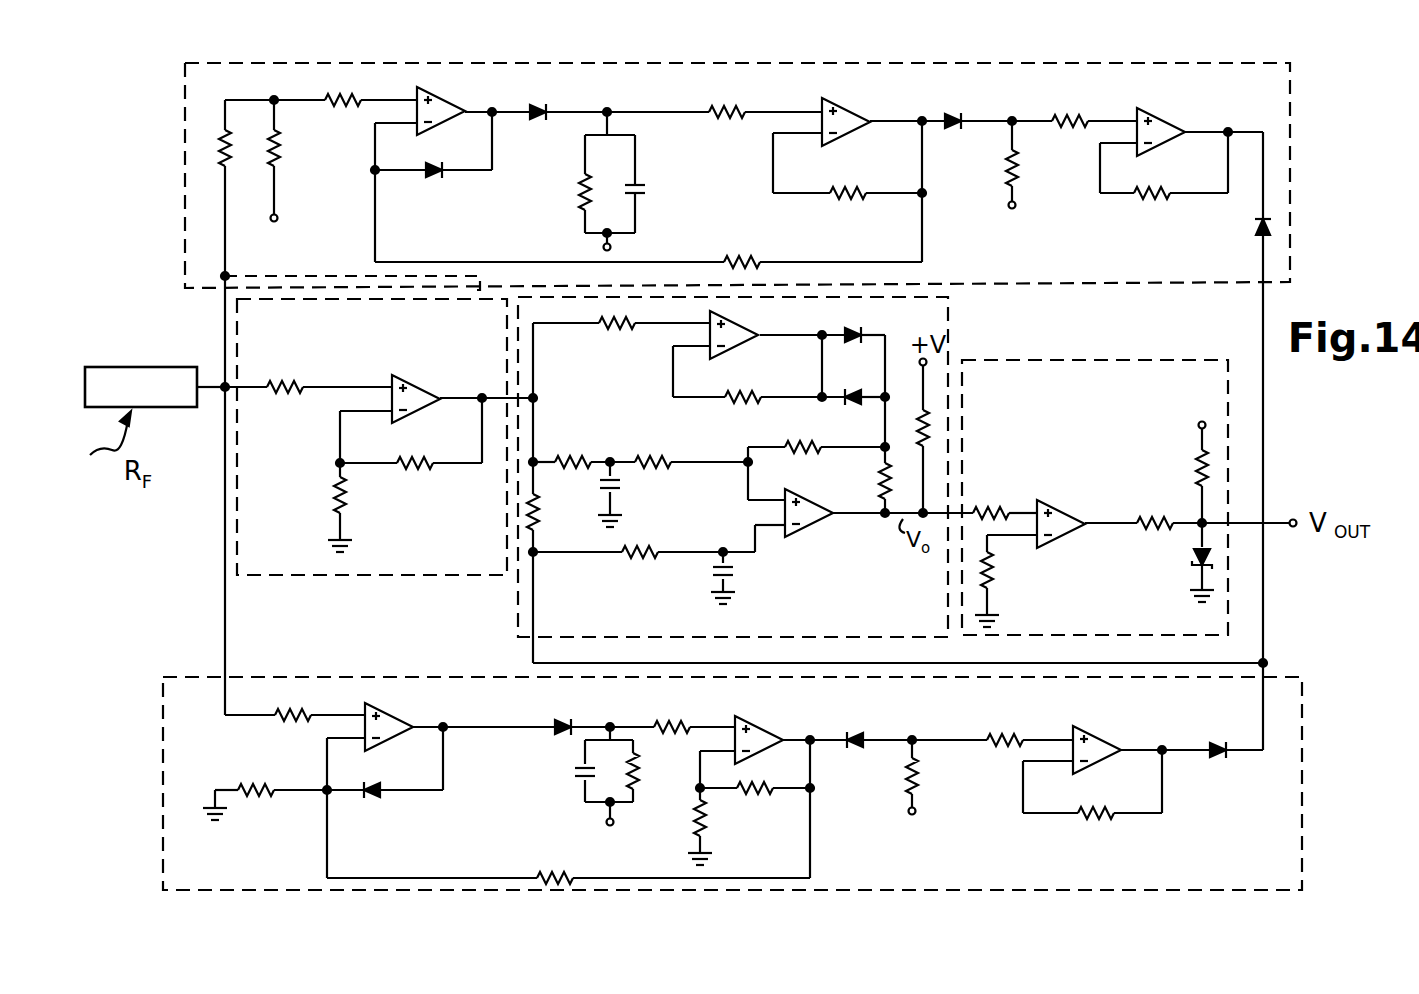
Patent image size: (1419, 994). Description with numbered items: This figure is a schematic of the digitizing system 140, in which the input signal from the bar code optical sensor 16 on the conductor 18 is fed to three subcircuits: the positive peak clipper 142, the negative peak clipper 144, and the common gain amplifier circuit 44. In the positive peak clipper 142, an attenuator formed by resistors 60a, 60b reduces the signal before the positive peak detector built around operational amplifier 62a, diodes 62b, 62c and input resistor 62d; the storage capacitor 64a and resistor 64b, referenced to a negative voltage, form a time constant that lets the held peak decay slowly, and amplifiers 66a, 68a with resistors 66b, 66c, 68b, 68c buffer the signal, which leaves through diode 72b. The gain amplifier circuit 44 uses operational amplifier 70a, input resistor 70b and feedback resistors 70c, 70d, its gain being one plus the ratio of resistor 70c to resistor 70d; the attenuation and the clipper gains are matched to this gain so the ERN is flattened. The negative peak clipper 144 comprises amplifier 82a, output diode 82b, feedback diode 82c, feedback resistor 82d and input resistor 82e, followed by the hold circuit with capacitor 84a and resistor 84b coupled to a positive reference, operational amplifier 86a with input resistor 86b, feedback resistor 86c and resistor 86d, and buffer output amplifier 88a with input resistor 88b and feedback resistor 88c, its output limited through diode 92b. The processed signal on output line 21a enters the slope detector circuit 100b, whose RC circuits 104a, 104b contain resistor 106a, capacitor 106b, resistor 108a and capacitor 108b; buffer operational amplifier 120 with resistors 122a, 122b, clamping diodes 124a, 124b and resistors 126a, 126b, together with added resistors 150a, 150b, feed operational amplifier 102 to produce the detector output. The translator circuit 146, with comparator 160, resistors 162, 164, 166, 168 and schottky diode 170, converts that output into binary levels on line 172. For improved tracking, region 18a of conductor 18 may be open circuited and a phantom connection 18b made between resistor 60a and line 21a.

The system 140 is at (1300, 72).
The positive peak clipper 142 is at (180, 110).
The negative peak clipper 144 is at (195, 655).
The translator circuit 146 is at (1125, 382).
The optical sensor 16 is at (147, 367).
The conductor 18 is at (215, 385).
The region of the conductor 18a is at (213, 325).
The connection 18b is at (310, 270).
The output line 21a is at (456, 396).
The amplifier circuit 44 is at (273, 585).
The resistor 60a is at (218, 150).
The resistor 60b is at (280, 148).
The operational amplifier 62a is at (448, 96).
The diode 62b is at (540, 122).
The diode 62c is at (428, 176).
The input resistor 62d is at (335, 108).
The storage capacitor 64a is at (645, 195).
The resistor 64b is at (580, 192).
The amplifier 66a is at (842, 98).
The resistor 66b is at (738, 118).
The resistor 66c is at (848, 200).
The amplifier 68a is at (1160, 108).
The resistor 68b is at (1082, 114).
The resistor 68c is at (1152, 200).
The diode 72b is at (1258, 222).
The operational amplifier 70a is at (420, 375).
The input resistor 70b is at (305, 395).
The feedback resistor 70c is at (412, 470).
The feedback resistor 70d is at (350, 512).
The slope detector circuit 100b is at (512, 600).
The operational amplifier 102 is at (818, 528).
The circuit 104a is at (632, 428).
The circuit 104b is at (675, 585).
The resistor 106a is at (568, 458).
The capacitor 106b is at (618, 488).
The resistor 108a is at (638, 558).
The capacitor 108b is at (733, 578).
The operational amplifier 120 is at (745, 325).
The resistor 122a is at (628, 330).
The resistor 122b is at (740, 392).
The diode 124a is at (848, 328).
The diode 124b is at (850, 408).
The resistor 126a is at (800, 458).
The resistor 126b is at (880, 500).
The resistor 150a is at (648, 456).
The resistor 150b is at (540, 505).
The comparator 160 is at (1062, 500).
The resistor 162 is at (1000, 505).
The resistor 164 is at (993, 558).
The resistor 166 is at (1160, 515).
The resistor 168 is at (1195, 455).
The schottky diode 170 is at (1195, 552).
The line 172 is at (1280, 520).
The amplifier 82a is at (400, 712).
The output diode 82b is at (565, 720).
The feedback diode 82c is at (372, 800).
The feedback resistor 82d is at (275, 797).
The input resistor 82e is at (306, 722).
The capacitor 84a is at (642, 778).
The resistor 84b is at (580, 775).
The operational amplifier 86a is at (765, 720).
The input resistor 86b is at (678, 720).
The resistor 86c is at (750, 782).
The resistor 86d is at (708, 815).
The buffer output amplifier 88a is at (1100, 728).
The input resistor 88b is at (975, 735).
The feedback resistor 88c is at (1105, 820).
The diode 92b is at (1208, 758).